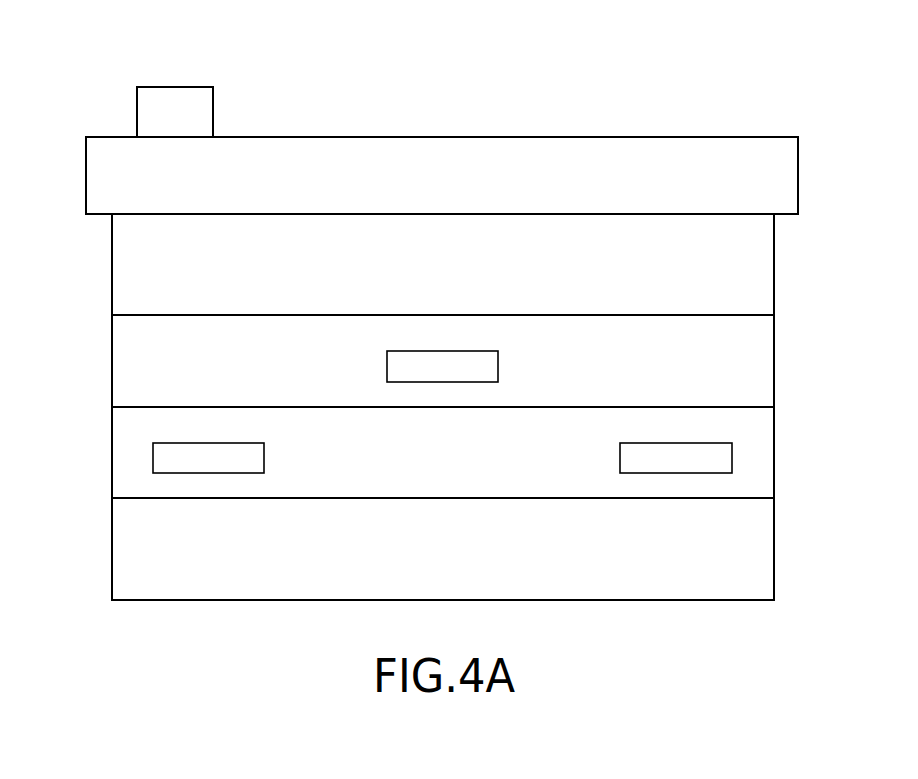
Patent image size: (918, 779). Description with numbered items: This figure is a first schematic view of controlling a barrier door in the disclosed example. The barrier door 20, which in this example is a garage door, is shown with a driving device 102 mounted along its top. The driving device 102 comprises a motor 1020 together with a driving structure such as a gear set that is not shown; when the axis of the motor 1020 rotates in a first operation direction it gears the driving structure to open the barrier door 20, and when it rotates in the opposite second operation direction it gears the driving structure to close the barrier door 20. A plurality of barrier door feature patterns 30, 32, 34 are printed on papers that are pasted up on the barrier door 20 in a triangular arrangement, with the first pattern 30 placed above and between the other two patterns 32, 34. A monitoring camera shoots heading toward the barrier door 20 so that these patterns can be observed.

The driving device 102 is at (743, 58).
The motor 1020 is at (145, 109).
The barrier door 20 is at (553, 232).
The barrier door feature pattern 30 is at (487, 365).
The barrier door feature pattern 32 is at (163, 457).
The barrier door feature pattern 34 is at (722, 457).